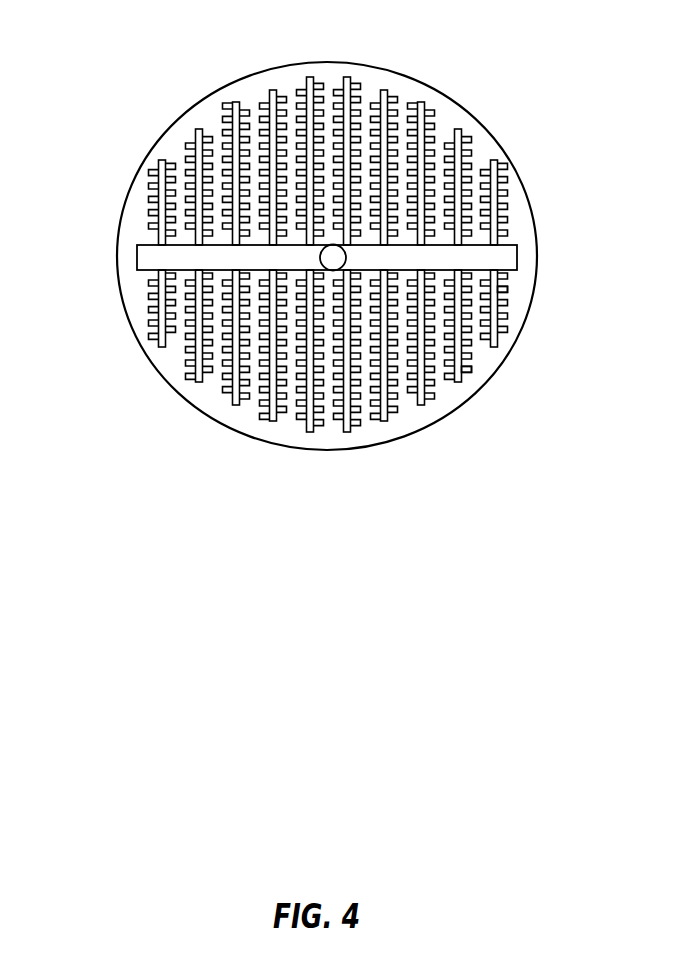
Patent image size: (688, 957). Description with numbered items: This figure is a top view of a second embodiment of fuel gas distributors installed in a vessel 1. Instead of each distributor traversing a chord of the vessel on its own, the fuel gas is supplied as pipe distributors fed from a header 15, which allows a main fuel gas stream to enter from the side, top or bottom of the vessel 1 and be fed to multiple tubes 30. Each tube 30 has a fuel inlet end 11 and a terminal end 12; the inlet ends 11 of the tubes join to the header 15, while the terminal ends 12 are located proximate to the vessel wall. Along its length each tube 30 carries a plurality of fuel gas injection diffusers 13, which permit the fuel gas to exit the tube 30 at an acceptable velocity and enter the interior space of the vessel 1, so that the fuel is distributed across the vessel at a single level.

The vessel 1 is at (445, 92).
The fuel inlet end 11 is at (140, 257).
The terminal end 12 is at (163, 162).
The fuel gas injection diffuser 13 is at (470, 138).
The header 15 is at (500, 257).
The tube 30 is at (505, 289).